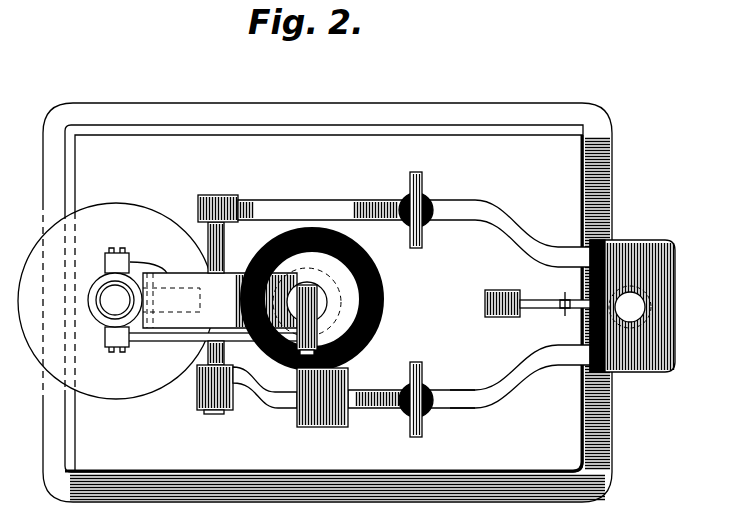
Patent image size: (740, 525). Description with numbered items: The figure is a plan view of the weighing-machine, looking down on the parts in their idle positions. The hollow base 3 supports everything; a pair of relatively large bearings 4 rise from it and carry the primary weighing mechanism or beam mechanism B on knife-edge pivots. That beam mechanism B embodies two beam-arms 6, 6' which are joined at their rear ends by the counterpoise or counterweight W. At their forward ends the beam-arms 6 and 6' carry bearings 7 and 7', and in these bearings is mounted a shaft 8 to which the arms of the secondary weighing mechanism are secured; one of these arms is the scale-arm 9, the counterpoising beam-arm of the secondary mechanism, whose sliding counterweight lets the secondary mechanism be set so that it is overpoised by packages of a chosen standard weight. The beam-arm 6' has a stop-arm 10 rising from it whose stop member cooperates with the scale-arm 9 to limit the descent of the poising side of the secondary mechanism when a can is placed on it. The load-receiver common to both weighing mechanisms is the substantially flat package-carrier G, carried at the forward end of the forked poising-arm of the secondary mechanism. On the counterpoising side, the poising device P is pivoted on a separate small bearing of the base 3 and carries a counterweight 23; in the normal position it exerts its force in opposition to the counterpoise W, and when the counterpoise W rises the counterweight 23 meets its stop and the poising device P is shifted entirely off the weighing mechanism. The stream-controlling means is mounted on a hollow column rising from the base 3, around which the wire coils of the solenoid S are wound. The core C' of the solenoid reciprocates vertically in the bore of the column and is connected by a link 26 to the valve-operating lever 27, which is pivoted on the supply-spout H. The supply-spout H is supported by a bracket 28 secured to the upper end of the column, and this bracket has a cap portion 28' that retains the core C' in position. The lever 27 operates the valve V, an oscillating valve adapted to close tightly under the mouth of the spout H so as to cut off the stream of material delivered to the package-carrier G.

The base 3 is at (327, 302).
The package-carrier G is at (115, 398).
The supply-spout H is at (90, 308).
The valve V is at (137, 268).
The bracket 28 is at (213, 287).
The valve-operating lever 27 is at (190, 343).
The solenoid S is at (324, 299).
The link 26 is at (315, 290).
The core of the solenoid C' is at (317, 316).
The shaft 8 is at (224, 247).
The bearing 7 is at (218, 197).
The bearing 7' is at (205, 403).
The beam-arm 6 is at (419, 222).
The beam-arm 6' is at (474, 389).
The cap portion 28' is at (319, 234).
The stop-arm 10 is at (365, 396).
The bearings 4 is at (424, 204).
The scale-arm 9 is at (277, 408).
The primary weighing mechanism B is at (462, 389).
The counterpoise W is at (630, 248).
The counterweight 23 is at (506, 288).
The poising device P is at (555, 299).